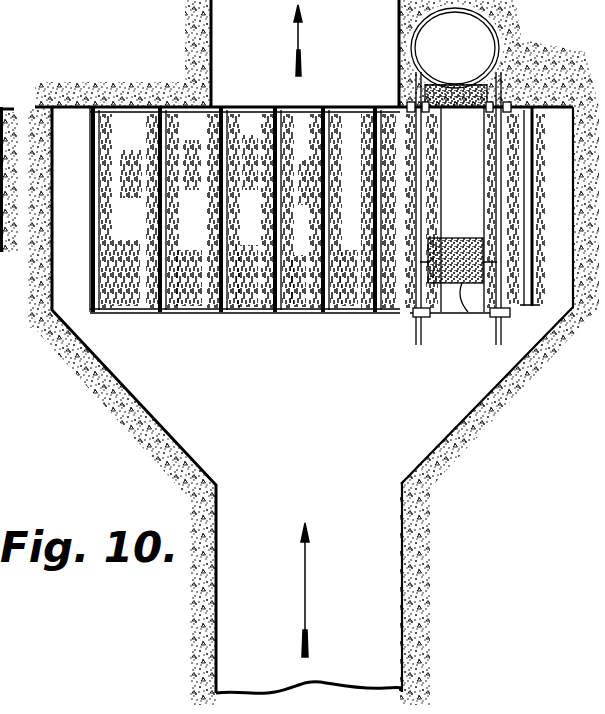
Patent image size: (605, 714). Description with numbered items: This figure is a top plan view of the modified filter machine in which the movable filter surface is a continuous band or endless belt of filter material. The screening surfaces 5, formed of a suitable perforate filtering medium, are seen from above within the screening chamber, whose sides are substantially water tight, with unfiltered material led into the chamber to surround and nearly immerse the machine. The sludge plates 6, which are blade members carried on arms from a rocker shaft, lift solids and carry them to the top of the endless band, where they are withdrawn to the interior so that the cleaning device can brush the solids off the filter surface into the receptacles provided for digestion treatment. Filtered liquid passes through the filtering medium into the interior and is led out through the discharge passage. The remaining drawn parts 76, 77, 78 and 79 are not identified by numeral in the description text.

The perforated screening surfaces 5 is at (513, 150).
The sludge plates 6 is at (218, 247).
The filter frame rails 76 is at (233, 108).
The rollers 77 is at (450, 72).
The guide rods 78 is at (500, 190).
The bracket 79 is at (500, 318).